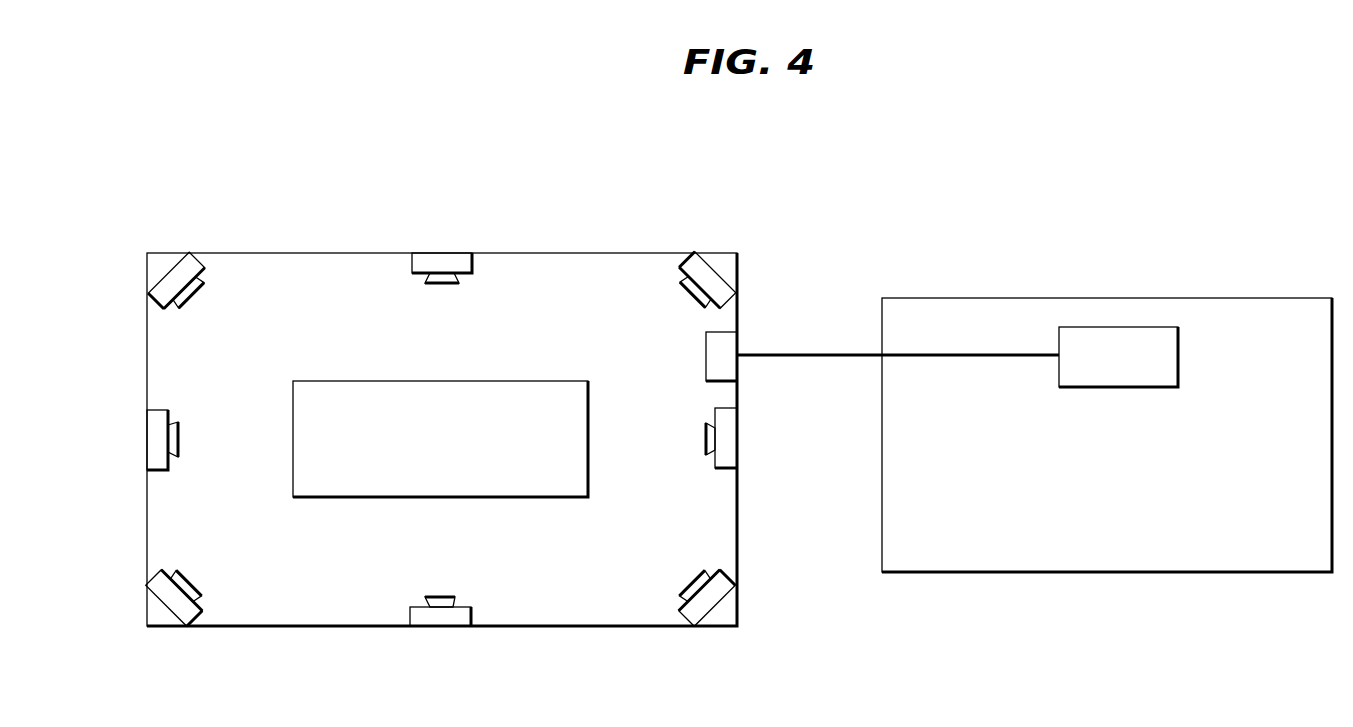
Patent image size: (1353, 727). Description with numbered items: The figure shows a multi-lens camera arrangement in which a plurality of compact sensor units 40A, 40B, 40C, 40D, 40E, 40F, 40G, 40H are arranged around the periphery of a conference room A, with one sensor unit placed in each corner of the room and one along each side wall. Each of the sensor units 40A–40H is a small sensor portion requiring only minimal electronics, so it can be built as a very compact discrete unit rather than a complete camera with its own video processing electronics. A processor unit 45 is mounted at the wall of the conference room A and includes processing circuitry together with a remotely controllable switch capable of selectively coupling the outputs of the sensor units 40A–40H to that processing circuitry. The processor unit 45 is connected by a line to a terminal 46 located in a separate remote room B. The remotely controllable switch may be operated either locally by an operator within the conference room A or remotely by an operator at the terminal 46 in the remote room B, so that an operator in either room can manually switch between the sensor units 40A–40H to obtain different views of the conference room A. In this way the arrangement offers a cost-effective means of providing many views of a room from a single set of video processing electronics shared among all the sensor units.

The conference room A is at (600, 253).
The remote room B is at (965, 298).
The sensor unit 40A is at (175, 278).
The sensor unit 40B is at (450, 260).
The sensor unit 40C is at (710, 280).
The sensor unit 40D is at (730, 435).
The sensor unit 40E is at (688, 628).
The sensor unit 40F is at (440, 617).
The sensor unit 40G is at (173, 605).
The sensor unit 40H is at (158, 437).
The processor unit 45 is at (727, 343).
The terminal 46 is at (1180, 355).